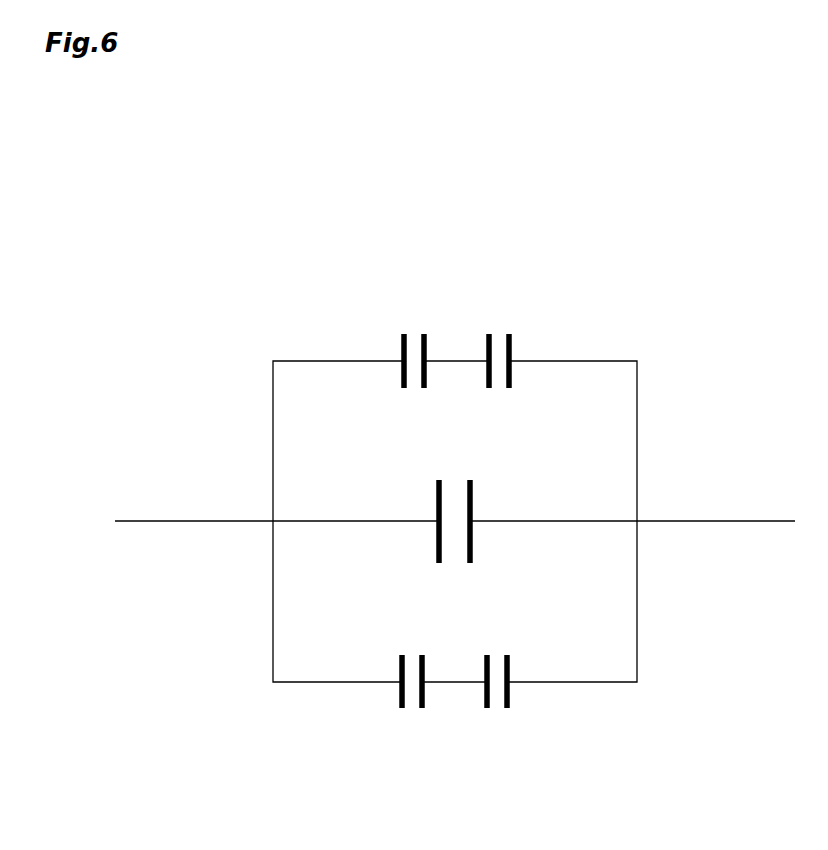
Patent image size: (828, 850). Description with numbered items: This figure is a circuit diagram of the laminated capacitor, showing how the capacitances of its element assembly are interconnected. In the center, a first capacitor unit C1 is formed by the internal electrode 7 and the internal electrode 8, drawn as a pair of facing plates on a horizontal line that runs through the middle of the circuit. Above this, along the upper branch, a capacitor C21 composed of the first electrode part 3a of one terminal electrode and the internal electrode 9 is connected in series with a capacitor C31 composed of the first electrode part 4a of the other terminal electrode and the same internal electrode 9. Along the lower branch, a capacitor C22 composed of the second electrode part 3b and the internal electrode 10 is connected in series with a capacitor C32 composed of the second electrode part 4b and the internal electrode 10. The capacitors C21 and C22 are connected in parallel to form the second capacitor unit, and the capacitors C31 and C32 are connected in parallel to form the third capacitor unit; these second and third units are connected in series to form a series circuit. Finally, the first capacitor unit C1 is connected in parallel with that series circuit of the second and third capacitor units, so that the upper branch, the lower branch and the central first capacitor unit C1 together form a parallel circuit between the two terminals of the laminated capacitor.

The first capacitor unit C1 is at (493, 490).
The internal electrode 7 is at (437, 500).
The internal electrode 8 is at (472, 542).
The capacitor C21 is at (405, 314).
The capacitor C22 is at (402, 730).
The capacitor C31 is at (511, 312).
The capacitor C32 is at (507, 730).
The first electrode part 3a is at (402, 347).
The second electrode part 3b is at (401, 697).
The first electrode part 4a is at (511, 347).
The second electrode part 4b is at (509, 697).
The internal electrode 9 is at (426, 348).
The internal electrode 10 is at (424, 696).